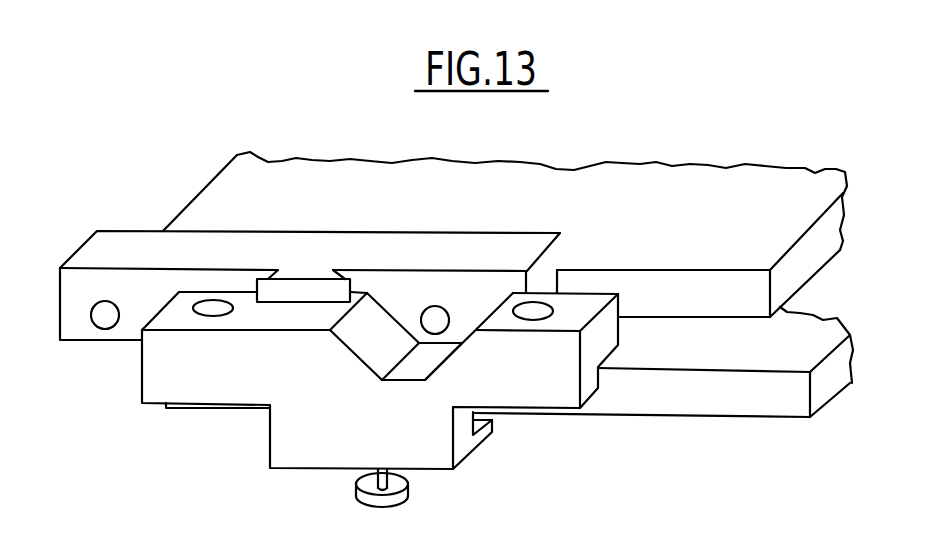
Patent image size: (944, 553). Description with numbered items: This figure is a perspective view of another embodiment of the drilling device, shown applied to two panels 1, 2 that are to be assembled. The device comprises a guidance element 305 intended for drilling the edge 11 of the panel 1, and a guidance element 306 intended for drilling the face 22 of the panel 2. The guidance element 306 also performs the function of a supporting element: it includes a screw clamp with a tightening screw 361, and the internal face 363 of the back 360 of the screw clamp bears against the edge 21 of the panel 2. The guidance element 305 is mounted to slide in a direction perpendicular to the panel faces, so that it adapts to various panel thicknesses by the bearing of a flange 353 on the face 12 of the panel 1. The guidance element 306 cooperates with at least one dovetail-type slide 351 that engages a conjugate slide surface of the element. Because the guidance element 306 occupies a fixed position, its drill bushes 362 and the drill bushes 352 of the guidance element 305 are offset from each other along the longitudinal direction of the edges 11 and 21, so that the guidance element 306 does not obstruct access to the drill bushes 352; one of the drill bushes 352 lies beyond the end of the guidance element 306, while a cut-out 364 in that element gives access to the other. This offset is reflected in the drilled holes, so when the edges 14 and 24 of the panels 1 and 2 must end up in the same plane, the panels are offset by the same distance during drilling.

The panel 1 is at (595, 183).
The edge of the panel 11 is at (700, 308).
The face of the panel 12 is at (753, 230).
The edge of the panel 14 is at (813, 253).
The panel 2 is at (755, 402).
The edge of the panel 21 is at (703, 409).
The face of the panel 22 is at (768, 359).
The edge of the panel 24 is at (827, 388).
The guidance element 305 is at (151, 200).
The guidance element 306 is at (143, 436).
The dovetail-type slide 351 is at (308, 288).
The drill bushes 352 is at (103, 317).
The flange 353 is at (573, 265).
The back of the screw clamp 360 is at (285, 443).
The tightening screw 361 is at (407, 498).
The drill bushes 362 is at (213, 306).
The internal face 363 is at (600, 383).
The cut-out 364 is at (372, 318).